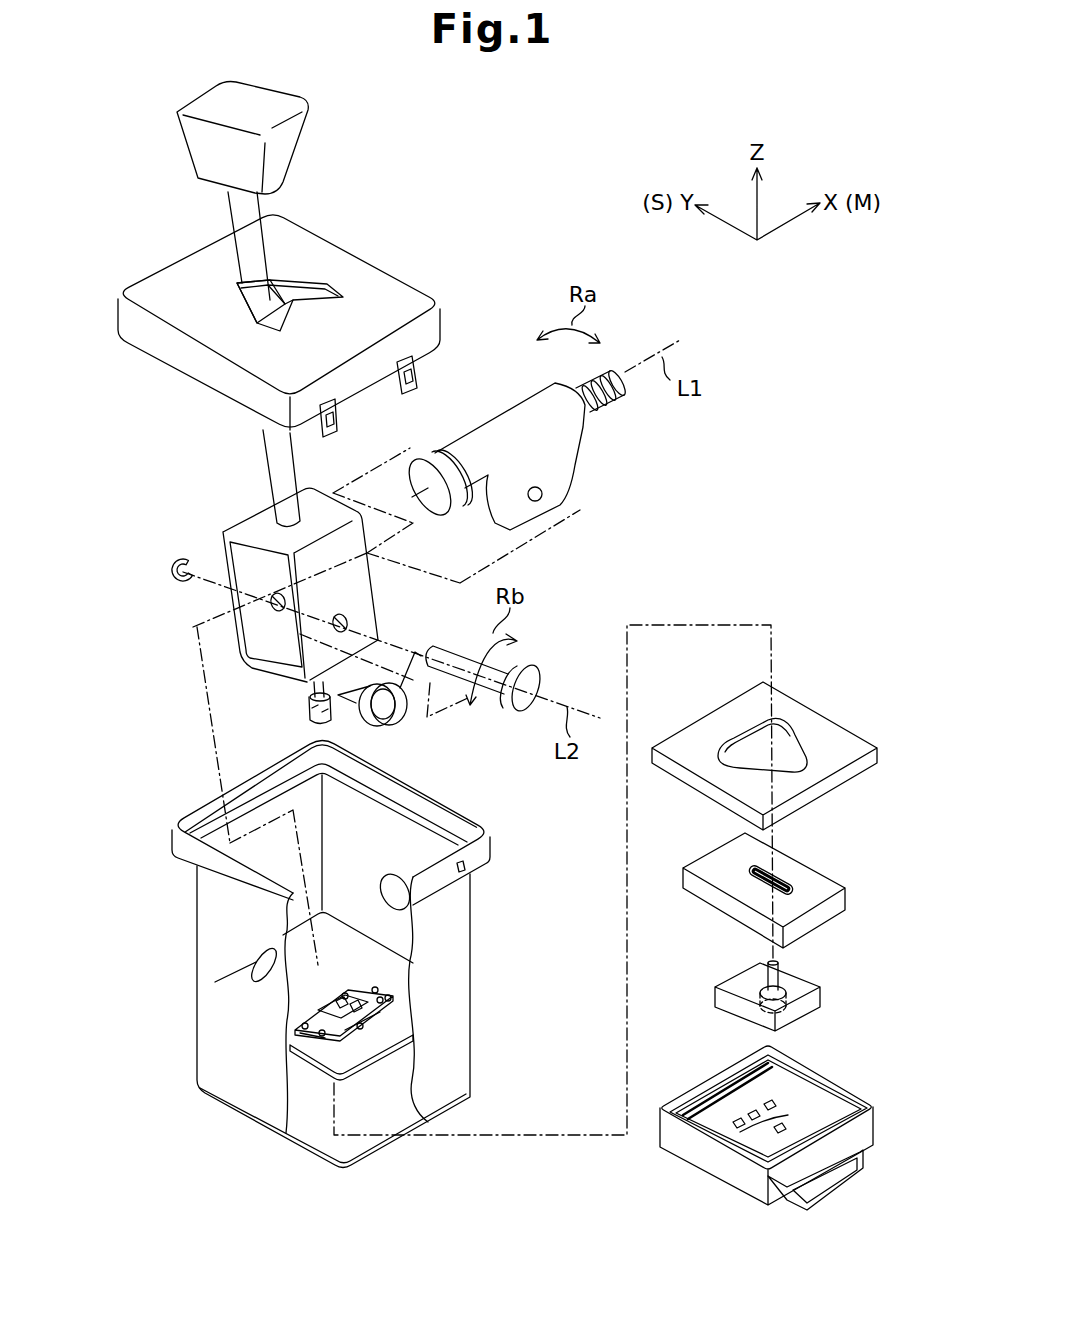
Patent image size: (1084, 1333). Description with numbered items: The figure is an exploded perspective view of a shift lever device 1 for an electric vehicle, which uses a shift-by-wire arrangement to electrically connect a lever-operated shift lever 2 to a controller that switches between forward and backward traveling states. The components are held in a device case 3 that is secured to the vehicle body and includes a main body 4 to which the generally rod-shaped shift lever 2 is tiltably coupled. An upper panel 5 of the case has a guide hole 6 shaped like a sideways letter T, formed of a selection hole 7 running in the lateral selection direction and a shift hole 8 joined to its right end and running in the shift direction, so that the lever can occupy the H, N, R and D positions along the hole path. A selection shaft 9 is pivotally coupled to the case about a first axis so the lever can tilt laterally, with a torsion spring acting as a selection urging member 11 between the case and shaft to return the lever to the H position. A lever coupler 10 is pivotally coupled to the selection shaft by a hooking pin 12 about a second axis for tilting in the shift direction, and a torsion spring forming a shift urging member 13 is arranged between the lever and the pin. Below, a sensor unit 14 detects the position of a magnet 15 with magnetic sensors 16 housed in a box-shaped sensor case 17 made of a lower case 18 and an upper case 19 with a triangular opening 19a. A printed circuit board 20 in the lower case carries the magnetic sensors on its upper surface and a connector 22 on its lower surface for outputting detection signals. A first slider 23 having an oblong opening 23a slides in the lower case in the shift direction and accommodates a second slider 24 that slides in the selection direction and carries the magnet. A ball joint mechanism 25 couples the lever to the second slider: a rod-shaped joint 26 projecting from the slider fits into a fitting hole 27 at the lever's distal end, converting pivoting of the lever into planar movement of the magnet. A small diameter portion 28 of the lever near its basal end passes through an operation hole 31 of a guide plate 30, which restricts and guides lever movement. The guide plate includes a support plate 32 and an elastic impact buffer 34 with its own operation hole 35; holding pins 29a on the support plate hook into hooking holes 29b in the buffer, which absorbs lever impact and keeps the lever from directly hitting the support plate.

The shift lever device 1 is at (612, 140).
The shift lever 2 is at (273, 103).
The device case 3 is at (148, 509).
The main body 4 is at (197, 888).
The upper panel 5 is at (142, 343).
The guide hole 6 is at (246, 327).
The selection hole 7 is at (245, 290).
The shift hole 8 is at (270, 328).
The selection shaft 9 is at (518, 400).
The lever coupler 10 is at (228, 632).
The selection urging member 11 is at (610, 410).
The hooking pin 12 is at (532, 677).
The shift urging member 13 is at (405, 718).
The sensor unit 14 is at (831, 641).
The magnet 15 is at (803, 1007).
The magnetic sensors 16 is at (790, 1116).
The sensor case 17 is at (668, 811).
The lower case 18 is at (766, 1115).
The upper case 19 is at (764, 757).
The triangular opening 19a is at (743, 745).
The printed circuit board 20 is at (807, 1093).
The connector 22 is at (837, 1190).
The first slider 23 is at (782, 887).
The oblong opening 23a is at (780, 877).
The second slider 24 is at (822, 1000).
The ball joint mechanism 25 is at (813, 967).
The joint 26 is at (768, 977).
The fitting hole 27 is at (310, 720).
The small diameter portion 28 is at (308, 692).
The holding pins 29a is at (390, 996).
The hooking holes 29b is at (375, 986).
The guide plate 30 is at (357, 898).
The operation hole 31 is at (345, 954).
The support plate 32 is at (363, 1073).
The impact buffer 34 is at (382, 1017).
The operation hole 35 is at (350, 984).